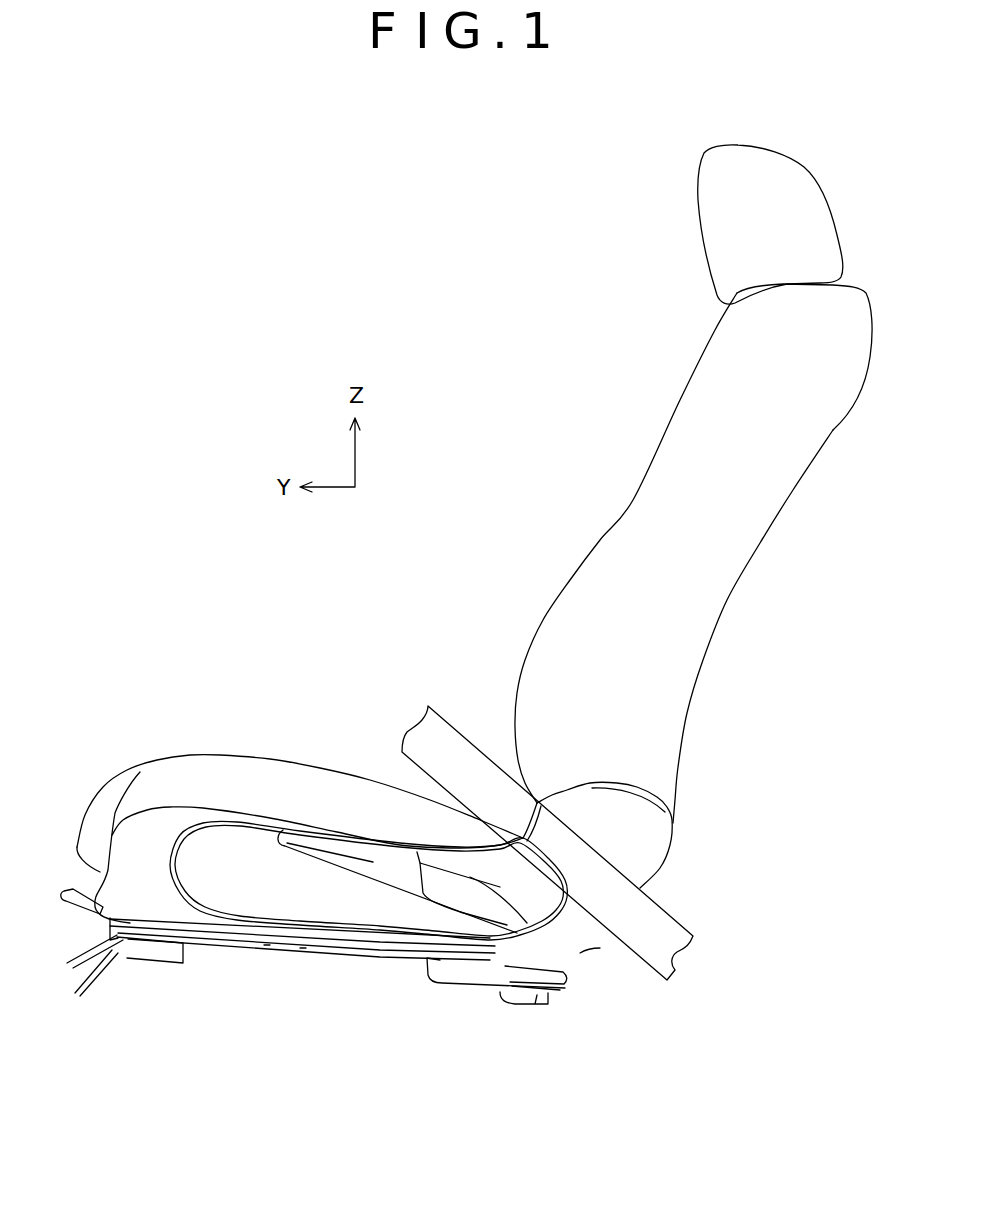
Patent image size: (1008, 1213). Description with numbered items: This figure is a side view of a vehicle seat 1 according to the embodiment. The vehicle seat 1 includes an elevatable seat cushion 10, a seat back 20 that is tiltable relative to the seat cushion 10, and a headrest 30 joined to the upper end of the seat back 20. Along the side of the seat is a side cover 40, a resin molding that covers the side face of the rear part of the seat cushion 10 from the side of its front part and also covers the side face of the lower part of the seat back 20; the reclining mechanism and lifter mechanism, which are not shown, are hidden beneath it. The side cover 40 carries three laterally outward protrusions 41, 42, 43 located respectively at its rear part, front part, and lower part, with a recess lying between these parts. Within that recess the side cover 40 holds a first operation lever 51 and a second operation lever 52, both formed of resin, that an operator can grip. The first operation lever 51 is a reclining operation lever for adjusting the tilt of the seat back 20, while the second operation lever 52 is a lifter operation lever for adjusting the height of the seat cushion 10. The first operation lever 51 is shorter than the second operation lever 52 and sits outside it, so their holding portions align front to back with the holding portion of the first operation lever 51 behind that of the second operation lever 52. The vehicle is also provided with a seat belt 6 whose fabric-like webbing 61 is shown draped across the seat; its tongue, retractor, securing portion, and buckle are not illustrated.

The vehicle seat 1 is at (472, 135).
The seat cushion 10 is at (265, 777).
The seat back 20 is at (620, 513).
The headrest 30 is at (700, 230).
The side cover 40 is at (365, 987).
The protrusion 41 is at (573, 928).
The protrusion 42 is at (136, 900).
The protrusion 43 is at (367, 903).
The first operation lever 51 is at (460, 870).
The second operation lever 52 is at (330, 853).
The seat belt 6 is at (598, 843).
The webbing 61 is at (684, 924).